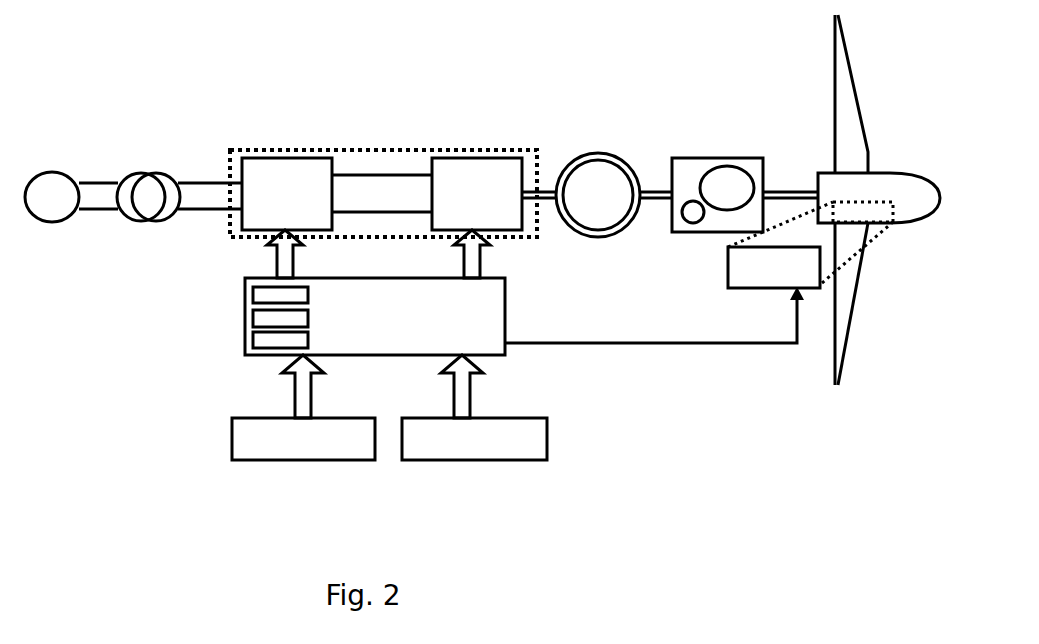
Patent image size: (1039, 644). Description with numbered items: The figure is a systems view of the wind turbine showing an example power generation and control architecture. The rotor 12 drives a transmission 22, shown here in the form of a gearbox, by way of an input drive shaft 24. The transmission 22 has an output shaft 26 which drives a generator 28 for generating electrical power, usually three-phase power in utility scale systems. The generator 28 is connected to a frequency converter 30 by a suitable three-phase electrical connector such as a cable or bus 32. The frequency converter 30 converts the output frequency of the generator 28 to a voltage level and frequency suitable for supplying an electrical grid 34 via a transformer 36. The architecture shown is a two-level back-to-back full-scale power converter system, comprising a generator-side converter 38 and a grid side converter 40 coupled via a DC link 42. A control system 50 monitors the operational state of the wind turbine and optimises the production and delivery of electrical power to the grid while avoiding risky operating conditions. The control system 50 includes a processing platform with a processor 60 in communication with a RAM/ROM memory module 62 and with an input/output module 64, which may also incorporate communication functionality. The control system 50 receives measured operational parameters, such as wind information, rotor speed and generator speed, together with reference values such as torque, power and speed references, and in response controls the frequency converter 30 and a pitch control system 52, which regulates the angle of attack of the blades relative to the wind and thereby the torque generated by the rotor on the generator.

The rotor 12 is at (889, 145).
The transmission 22 is at (692, 157).
The input drive shaft 24 is at (790, 188).
The output shaft 26 is at (658, 188).
The generator 28 is at (599, 156).
The frequency converter 30 is at (355, 150).
The cable or bus 32 is at (546, 188).
The electrical grid 34 is at (53, 172).
The transformer 36 is at (135, 172).
The generator-side converter 38 is at (458, 210).
The grid side converter 40 is at (268, 210).
The DC link 42 is at (370, 208).
The control system 50 is at (368, 332).
The pitch control system 52 is at (761, 282).
The processor 60 is at (253, 294).
The memory module 62 is at (253, 319).
The input/output module 64 is at (253, 340).